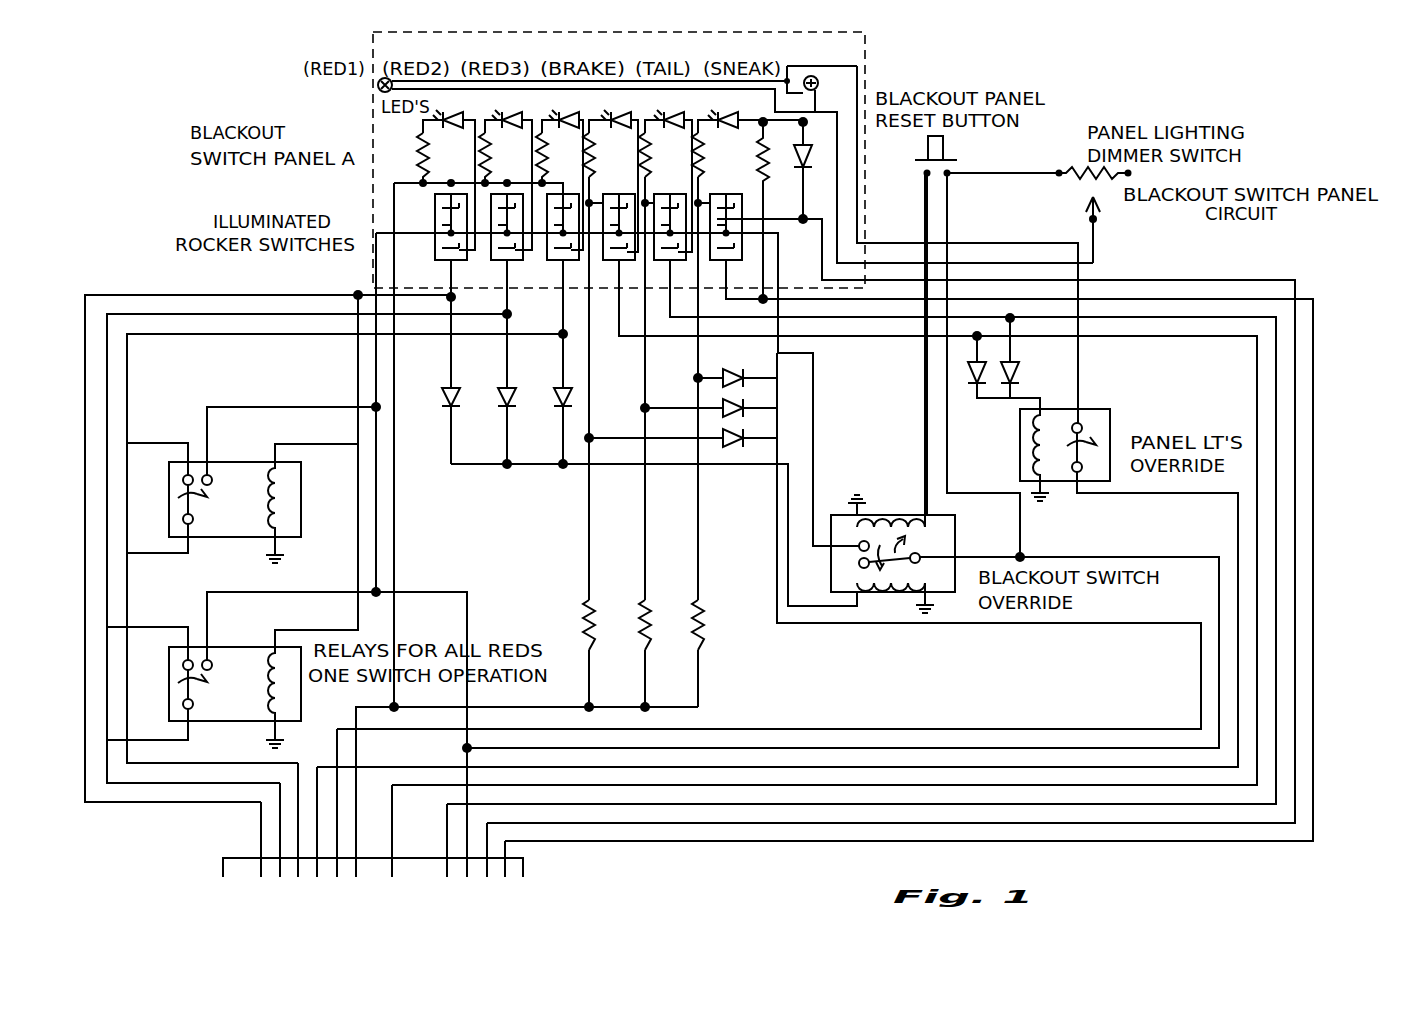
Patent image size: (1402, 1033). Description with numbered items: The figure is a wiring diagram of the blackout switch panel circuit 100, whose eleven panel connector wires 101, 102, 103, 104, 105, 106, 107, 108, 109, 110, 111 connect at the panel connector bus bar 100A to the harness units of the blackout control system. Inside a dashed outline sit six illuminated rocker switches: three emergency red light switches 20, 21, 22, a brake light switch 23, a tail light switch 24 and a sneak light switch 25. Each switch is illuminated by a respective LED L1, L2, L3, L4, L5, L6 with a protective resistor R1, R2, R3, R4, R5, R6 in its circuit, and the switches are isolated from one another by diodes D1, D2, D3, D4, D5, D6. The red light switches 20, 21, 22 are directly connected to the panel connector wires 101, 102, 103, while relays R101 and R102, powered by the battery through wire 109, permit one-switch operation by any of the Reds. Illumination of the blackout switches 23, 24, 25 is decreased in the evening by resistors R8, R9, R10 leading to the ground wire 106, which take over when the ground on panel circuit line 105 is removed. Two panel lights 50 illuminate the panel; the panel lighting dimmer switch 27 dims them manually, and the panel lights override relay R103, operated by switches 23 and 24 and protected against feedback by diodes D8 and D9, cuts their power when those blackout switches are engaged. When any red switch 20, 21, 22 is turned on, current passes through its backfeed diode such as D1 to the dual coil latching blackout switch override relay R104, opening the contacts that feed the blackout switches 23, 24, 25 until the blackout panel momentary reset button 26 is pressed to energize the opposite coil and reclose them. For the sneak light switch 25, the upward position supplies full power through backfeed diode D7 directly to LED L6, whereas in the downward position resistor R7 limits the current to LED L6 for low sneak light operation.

The emergency red light switch 20 is at (435, 244).
The emergency red light switch 21 is at (497, 244).
The emergency red light switch 22 is at (553, 244).
The brake light switch 23 is at (613, 244).
The tail light switch 24 is at (667, 244).
The sneak light switch 25 is at (722, 244).
The blackout panel momentary reset button 26 is at (952, 148).
The panel lighting dimmer switch 27 is at (1093, 215).
The panel light 50 is at (379, 90).
The blackout switch panel circuit 100 is at (1243, 266).
The panel connector bus bar 100A is at (523, 864).
The panel connector wire 101 is at (252, 839).
The panel connector wire 102 is at (271, 830).
The panel connector wire 103 is at (289, 820).
The panel connector wire 104 is at (308, 822).
The panel circuit line 105 is at (328, 803).
The ground wire 106 is at (347, 792).
The panel connector wire 107 is at (383, 831).
The panel connector wire 108 is at (438, 840).
The panel connector wire 109 is at (458, 812).
The panel connector wire 110 is at (478, 850).
The panel connector wire 111 is at (496, 850).
The light emitting diode L1 is at (456, 173).
The light emitting diode L2 is at (517, 173).
The light emitting diode L3 is at (572, 173).
The light emitting diode L4 is at (621, 174).
The light emitting diode L5 is at (676, 174).
The light emitting diode L6 is at (750, 114).
The protective resistor R1 is at (439, 158).
The protective resistor R2 is at (498, 158).
The protective resistor R3 is at (553, 158).
The protective resistor R4 is at (603, 155).
The protective resistor R5 is at (658, 155).
The protective resistor R6 is at (713, 155).
The resistor R7 is at (750, 210).
The resistor R8 is at (599, 615).
The resistor R9 is at (659, 615).
The resistor R10 is at (716, 615).
The backfeed diode D1 is at (437, 398).
The diode D2 is at (493, 398).
The diode D3 is at (548, 398).
The diode D4 is at (747, 373).
The diode D5 is at (747, 403).
The diode D6 is at (747, 433).
The backfeed diode D7 is at (815, 170).
The diode D8 is at (967, 362).
The diode D9 is at (1022, 362).
The relay R101 is at (235, 486).
The relay R102 is at (235, 671).
The panel lights override relay R103 is at (1076, 434).
The blackout switch override relay R104 is at (920, 553).